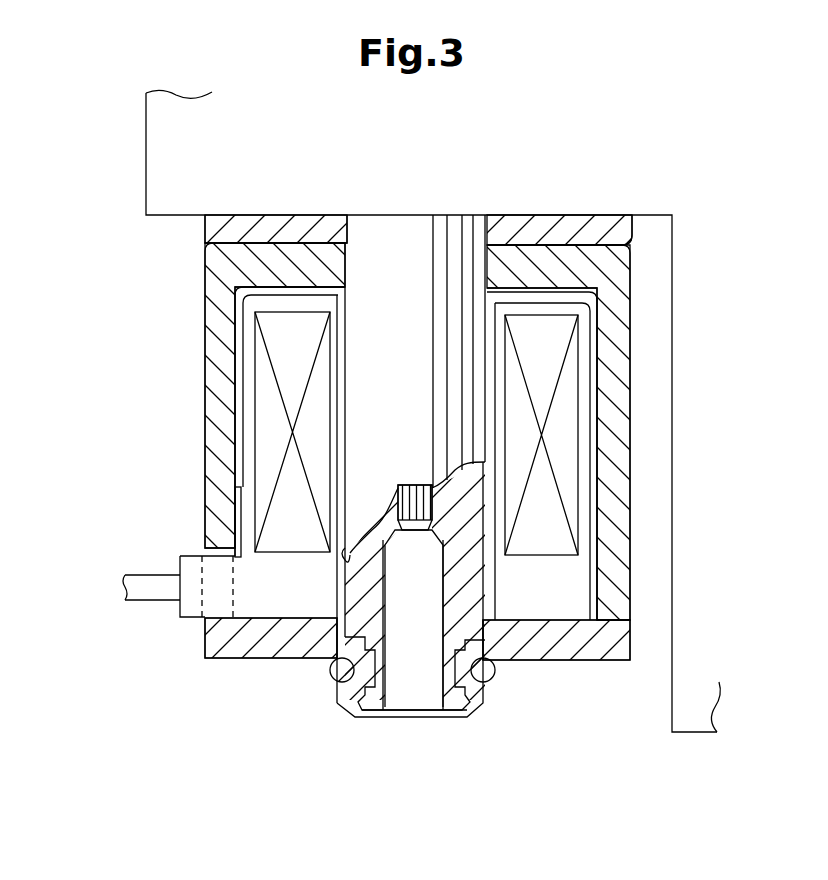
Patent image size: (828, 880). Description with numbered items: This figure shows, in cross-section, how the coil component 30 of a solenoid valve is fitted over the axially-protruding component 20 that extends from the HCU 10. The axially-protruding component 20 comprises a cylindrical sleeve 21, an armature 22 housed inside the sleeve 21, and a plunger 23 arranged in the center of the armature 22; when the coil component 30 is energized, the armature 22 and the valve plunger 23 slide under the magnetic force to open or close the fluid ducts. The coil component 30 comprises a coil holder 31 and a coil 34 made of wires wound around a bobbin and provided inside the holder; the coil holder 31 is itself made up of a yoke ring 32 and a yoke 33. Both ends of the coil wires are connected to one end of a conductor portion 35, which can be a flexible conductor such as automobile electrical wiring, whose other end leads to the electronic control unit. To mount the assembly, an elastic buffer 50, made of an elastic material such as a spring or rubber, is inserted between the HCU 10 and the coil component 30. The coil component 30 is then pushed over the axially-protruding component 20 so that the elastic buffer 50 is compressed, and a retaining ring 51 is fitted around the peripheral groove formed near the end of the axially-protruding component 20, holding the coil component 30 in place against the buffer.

The HCU 10 is at (146, 153).
The axially-protruding component 20 is at (350, 638).
The cylindrical sleeve 21 is at (487, 705).
The armature 22 is at (373, 718).
The plunger 23 is at (402, 488).
The coil component 30 is at (368, 480).
The coil holder 31 is at (206, 280).
The yoke ring 32 is at (212, 322).
The yoke 33 is at (248, 660).
The coil 34 is at (262, 408).
The conductor portion 35 is at (143, 603).
The elastic buffer 50 is at (215, 232).
The retaining ring 51 is at (337, 683).